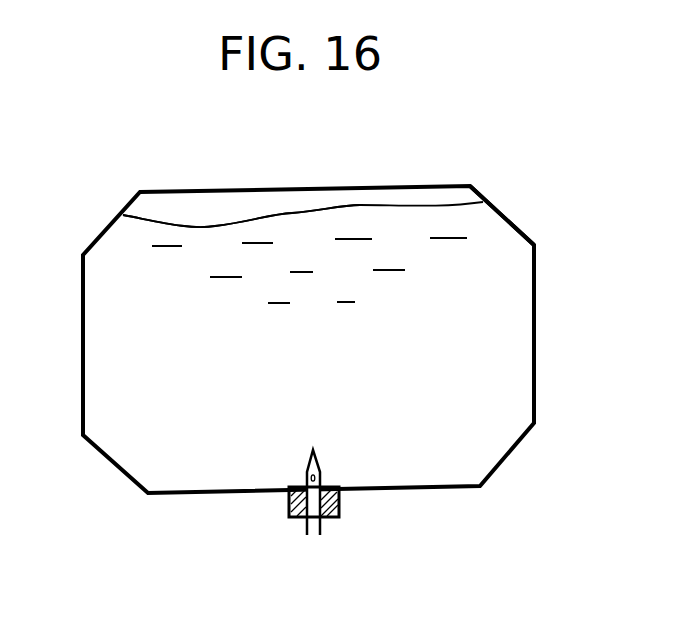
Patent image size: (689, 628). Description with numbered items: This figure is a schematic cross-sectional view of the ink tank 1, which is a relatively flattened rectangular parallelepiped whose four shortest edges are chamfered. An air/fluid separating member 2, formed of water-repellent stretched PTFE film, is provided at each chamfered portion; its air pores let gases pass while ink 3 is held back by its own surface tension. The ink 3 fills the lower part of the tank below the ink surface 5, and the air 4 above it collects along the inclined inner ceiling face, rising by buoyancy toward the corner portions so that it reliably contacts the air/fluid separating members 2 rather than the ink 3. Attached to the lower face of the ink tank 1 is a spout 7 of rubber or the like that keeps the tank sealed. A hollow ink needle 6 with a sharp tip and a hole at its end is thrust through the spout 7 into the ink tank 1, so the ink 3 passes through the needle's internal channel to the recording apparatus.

The ink tank 1 is at (534, 318).
The air/fluid separating member 2 is at (511, 219).
The ink 3 is at (393, 228).
The air 4 is at (228, 206).
The ink surface 5 is at (320, 210).
The ink needle 6 is at (305, 526).
The spout 7 is at (340, 512).